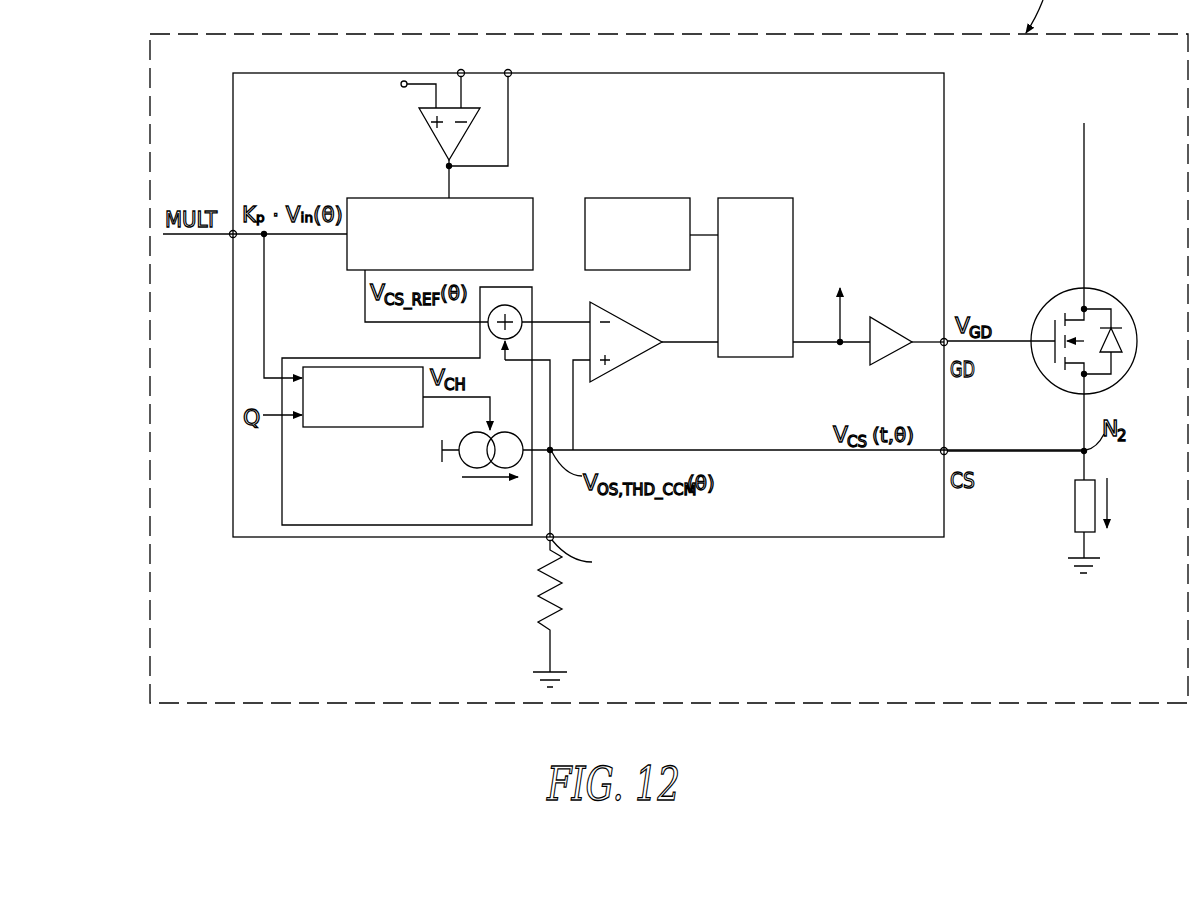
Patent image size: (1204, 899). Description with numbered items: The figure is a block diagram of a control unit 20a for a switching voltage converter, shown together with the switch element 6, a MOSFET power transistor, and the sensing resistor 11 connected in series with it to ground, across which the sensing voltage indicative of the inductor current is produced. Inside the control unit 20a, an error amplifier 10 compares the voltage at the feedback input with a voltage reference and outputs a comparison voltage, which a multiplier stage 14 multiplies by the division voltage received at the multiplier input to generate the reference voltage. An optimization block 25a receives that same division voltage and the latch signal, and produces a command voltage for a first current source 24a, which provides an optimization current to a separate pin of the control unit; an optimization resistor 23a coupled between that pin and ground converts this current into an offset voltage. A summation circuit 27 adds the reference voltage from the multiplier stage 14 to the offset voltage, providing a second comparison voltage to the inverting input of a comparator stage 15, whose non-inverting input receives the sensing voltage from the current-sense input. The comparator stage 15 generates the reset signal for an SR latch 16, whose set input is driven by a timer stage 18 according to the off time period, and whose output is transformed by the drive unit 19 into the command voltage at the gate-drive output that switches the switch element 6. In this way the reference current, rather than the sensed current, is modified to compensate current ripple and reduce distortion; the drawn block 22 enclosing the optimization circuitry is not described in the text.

The switch element 6 is at (1077, 318).
The error amplifier 10 is at (440, 132).
The sensing resistor 11 is at (1072, 522).
The multiplier stage 14 is at (519, 198).
The comparator stage 15 is at (627, 363).
The SR latch 16 is at (755, 198).
The timer stage 18 is at (638, 198).
The drive unit 19 is at (893, 330).
The control unit 20a is at (230, 437).
The THD optimizer circuit block 22 is at (280, 440).
The optimization resistor 23a is at (547, 617).
The first current source 24a is at (475, 433).
The optimization block 25a is at (360, 428).
The summation circuit 27 is at (518, 309).